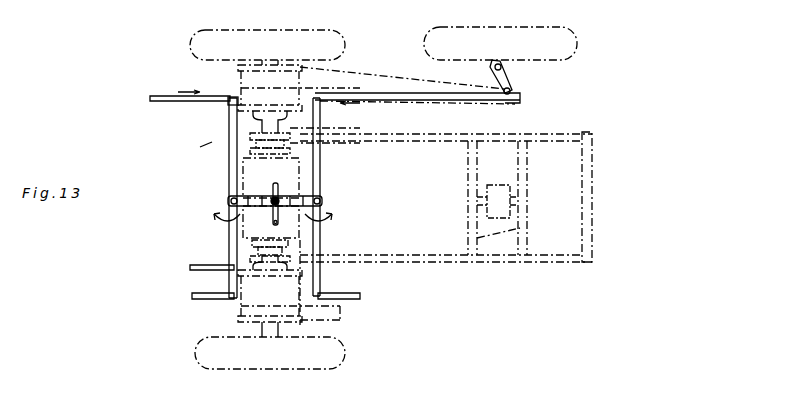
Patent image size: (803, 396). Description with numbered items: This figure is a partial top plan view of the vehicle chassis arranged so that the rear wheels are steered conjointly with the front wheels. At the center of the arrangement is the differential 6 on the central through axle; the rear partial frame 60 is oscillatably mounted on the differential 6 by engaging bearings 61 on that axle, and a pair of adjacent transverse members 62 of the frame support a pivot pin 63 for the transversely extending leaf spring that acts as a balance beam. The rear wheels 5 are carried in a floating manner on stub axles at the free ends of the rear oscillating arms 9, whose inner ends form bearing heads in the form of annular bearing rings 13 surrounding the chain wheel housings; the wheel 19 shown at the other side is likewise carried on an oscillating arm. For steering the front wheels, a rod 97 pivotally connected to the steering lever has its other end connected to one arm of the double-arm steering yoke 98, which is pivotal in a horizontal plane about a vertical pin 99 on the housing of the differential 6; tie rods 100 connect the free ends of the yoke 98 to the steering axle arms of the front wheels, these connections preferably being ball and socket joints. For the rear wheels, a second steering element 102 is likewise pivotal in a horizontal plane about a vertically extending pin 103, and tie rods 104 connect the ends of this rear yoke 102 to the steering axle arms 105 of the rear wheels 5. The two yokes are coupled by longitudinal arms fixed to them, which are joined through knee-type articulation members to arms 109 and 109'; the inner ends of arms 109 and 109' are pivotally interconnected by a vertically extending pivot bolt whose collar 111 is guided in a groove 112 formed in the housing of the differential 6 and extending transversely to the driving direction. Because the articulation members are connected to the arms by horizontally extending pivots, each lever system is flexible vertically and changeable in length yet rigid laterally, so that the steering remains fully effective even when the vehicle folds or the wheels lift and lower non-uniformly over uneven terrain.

The rear wheel 5 is at (512, 31).
The differential 6 is at (252, 168).
The rear oscillating arm 9 is at (384, 74).
The bearing ring 13 is at (247, 78).
The wheel 19 is at (324, 37).
The rear partial frame 60 is at (448, 136).
The bearing 61 is at (193, 151).
The transverse member 62 is at (524, 223).
The pivot pin 63 is at (512, 196).
The rod 97 is at (200, 266).
The double-arm steering yoke 98 is at (232, 134).
The vertical pin 99 is at (233, 203).
The tie rod 100 is at (172, 98).
The second steering element 102 is at (320, 166).
The vertically extending pin 103 is at (323, 203).
The tie rod 104 is at (412, 98).
The steering axle arm 105 is at (508, 72).
The arm 109 is at (264, 207).
The arm 109' is at (293, 179).
The collar 111 is at (270, 196).
The groove 112 is at (290, 226).